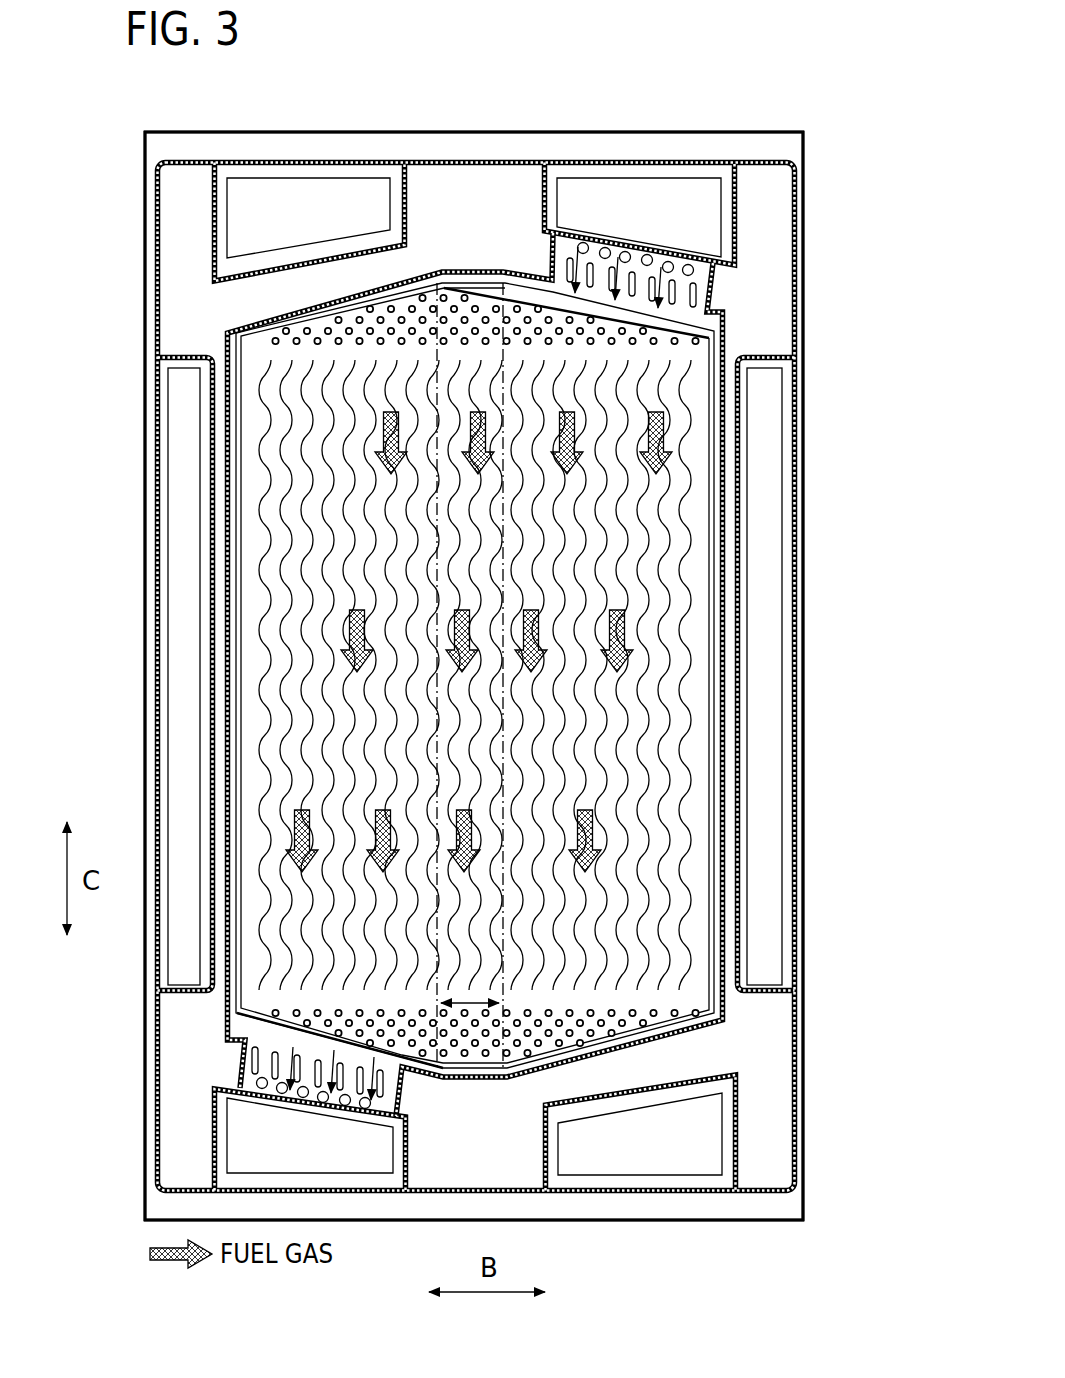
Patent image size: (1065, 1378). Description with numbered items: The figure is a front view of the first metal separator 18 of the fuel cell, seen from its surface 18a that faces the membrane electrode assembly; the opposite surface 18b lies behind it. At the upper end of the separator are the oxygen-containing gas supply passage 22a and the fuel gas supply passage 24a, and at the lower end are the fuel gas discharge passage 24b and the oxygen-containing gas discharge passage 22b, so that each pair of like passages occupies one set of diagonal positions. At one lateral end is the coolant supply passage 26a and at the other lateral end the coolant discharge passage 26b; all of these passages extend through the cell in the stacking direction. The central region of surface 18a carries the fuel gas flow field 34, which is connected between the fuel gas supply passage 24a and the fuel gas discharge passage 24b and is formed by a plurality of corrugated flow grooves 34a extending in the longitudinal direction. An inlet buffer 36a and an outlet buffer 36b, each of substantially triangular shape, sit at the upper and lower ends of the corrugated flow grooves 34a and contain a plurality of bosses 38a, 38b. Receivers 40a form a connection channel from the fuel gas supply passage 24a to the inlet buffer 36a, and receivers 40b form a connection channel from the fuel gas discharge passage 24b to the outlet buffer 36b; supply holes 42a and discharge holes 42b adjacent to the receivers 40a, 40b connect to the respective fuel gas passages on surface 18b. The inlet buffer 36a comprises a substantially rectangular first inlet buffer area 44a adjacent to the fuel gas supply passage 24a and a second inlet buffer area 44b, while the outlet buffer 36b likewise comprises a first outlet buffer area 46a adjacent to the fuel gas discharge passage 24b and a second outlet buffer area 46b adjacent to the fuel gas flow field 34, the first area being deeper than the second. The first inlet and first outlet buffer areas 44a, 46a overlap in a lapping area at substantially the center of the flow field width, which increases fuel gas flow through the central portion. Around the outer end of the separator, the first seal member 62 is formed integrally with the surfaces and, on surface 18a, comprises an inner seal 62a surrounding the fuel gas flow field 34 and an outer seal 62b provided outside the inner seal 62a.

The first metal separator 18 is at (714, 71).
The surface 18a is at (767, 1125).
The surface 18b is at (765, 1160).
The oxygen-containing gas supply passage 22a is at (308, 218).
The oxygen-containing gas discharge passage 22b is at (640, 1134).
The fuel gas supply passage 24a is at (639, 217).
The fuel gas discharge passage 24b is at (310, 1135).
The coolant supply passage 26a is at (185, 623).
The coolant discharge passage 26b is at (765, 643).
The fuel gas flow field 34 is at (555, 675).
The corrugated flow grooves 34a is at (628, 887).
The inlet buffer 36a is at (471, 428).
The outlet buffer 36b is at (489, 925).
The bosses 38a is at (387, 307).
The bosses 38b is at (563, 1045).
The receivers 40a is at (676, 248).
The receivers 40b is at (275, 1108).
The supply holes 42a is at (625, 251).
The discharge holes 42b is at (367, 1109).
The first inlet buffer area 44a is at (505, 300).
The second inlet buffer area 44b is at (447, 297).
The first outlet buffer area 46a is at (443, 1062).
The second outlet buffer area 46b is at (497, 1062).
The first seal member 62 is at (519, 677).
The inner seal 62a is at (724, 596).
The outer seal 62b is at (798, 708).